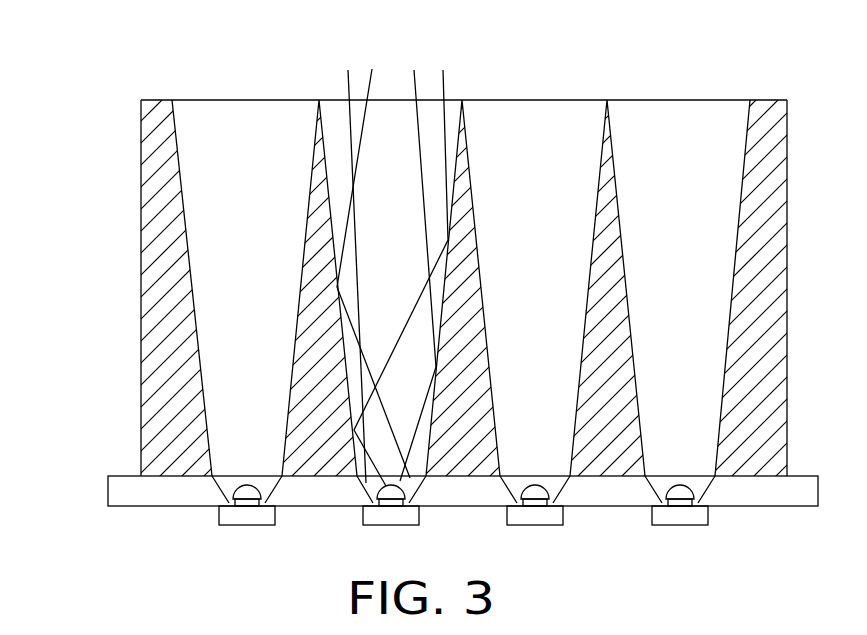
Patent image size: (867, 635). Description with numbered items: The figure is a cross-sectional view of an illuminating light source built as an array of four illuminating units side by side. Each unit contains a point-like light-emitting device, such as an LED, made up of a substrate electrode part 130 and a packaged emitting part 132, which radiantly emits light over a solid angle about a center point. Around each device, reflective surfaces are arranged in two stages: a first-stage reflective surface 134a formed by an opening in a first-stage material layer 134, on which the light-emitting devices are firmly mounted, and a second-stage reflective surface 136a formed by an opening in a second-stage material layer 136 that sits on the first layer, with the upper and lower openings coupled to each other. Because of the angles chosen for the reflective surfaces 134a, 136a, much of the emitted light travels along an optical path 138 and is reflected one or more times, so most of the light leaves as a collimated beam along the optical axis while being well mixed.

The substrate electrode part 130 is at (243, 518).
The packaged emitting part 132 is at (252, 480).
The first-stage material layer 134 is at (115, 491).
The first-stage reflective surface 134a is at (210, 485).
The second-stage material layer 136 is at (163, 300).
The second-stage reflective surface 136a is at (183, 223).
The optical path 138 is at (418, 82).